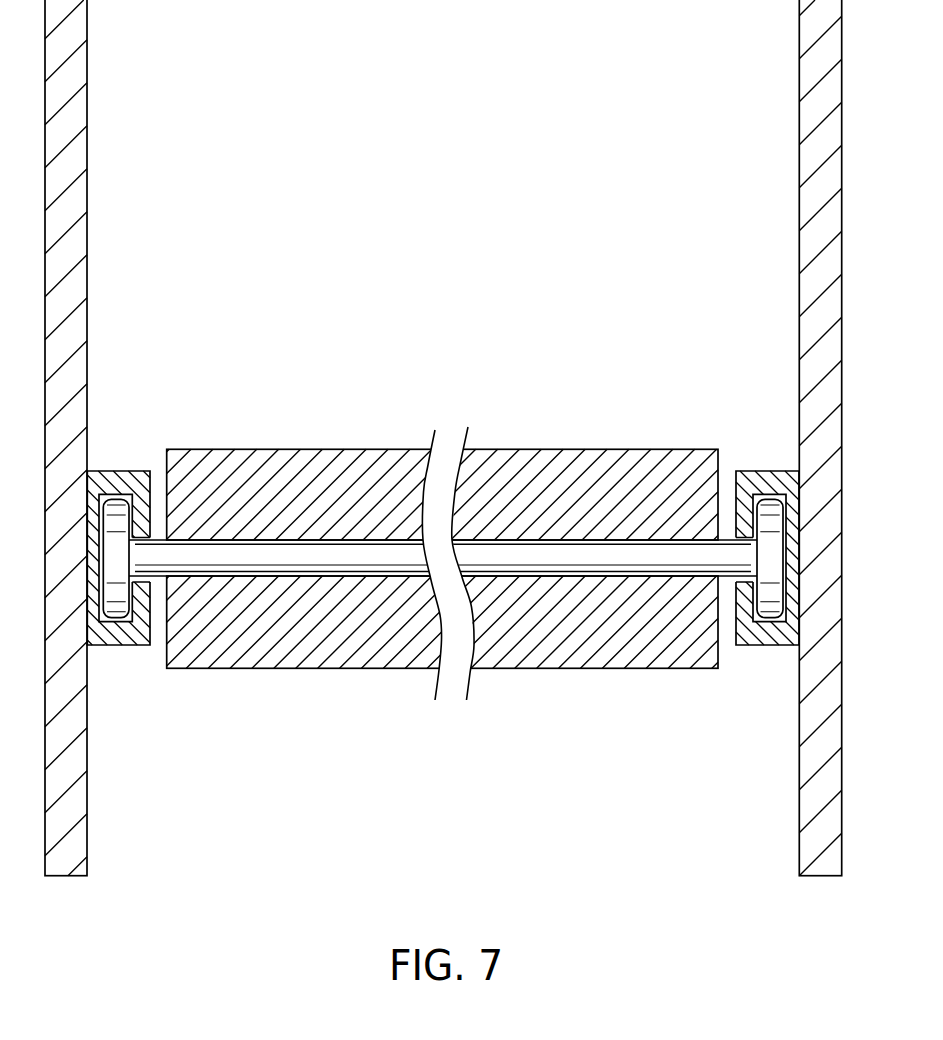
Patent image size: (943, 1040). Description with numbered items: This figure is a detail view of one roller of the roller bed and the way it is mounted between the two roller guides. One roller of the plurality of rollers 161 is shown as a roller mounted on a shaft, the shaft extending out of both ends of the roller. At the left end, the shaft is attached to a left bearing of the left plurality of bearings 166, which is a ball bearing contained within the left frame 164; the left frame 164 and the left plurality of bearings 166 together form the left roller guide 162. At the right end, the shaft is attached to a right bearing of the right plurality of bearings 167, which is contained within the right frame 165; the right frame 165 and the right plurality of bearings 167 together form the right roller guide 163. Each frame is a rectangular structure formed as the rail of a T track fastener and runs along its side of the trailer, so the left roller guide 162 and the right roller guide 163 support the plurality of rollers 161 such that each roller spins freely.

The plurality of rollers 161 is at (580, 462).
The left roller guide 162 is at (169, 493).
The right roller guide 163 is at (717, 496).
The left frame 164 is at (125, 470).
The right frame 165 is at (758, 470).
The left plurality of bearings 166 is at (120, 603).
The right plurality of bearings 167 is at (772, 603).